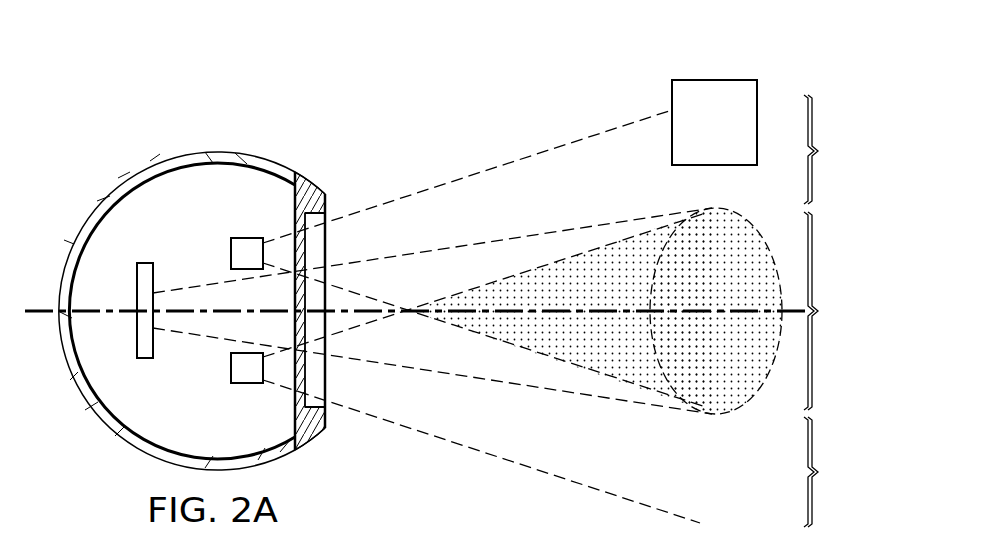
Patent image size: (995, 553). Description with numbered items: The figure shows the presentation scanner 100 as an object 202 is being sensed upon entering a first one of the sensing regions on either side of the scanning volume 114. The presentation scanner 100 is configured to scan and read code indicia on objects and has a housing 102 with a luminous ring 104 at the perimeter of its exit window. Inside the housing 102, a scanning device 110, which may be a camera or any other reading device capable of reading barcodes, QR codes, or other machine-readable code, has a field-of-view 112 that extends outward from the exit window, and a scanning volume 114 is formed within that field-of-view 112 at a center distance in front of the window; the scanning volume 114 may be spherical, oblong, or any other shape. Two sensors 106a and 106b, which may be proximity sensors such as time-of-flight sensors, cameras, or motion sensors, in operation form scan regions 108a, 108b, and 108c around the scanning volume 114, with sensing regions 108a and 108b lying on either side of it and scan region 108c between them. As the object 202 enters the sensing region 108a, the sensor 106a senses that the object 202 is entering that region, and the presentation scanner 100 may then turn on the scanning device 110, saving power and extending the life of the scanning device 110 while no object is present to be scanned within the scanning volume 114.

The presentation scanner 100 is at (253, 67).
The housing 102 is at (120, 187).
The luminous ring 104 is at (316, 190).
The sensor 106a is at (246, 238).
The sensor 106b is at (246, 384).
The scanning device 110 is at (143, 263).
The field-of-view 112 is at (207, 334).
The scanning volume 114 is at (738, 216).
The object 202 is at (715, 80).
The sensing region 108a is at (838, 149).
The sensing region 108b is at (838, 472).
The scan region 108c is at (838, 311).